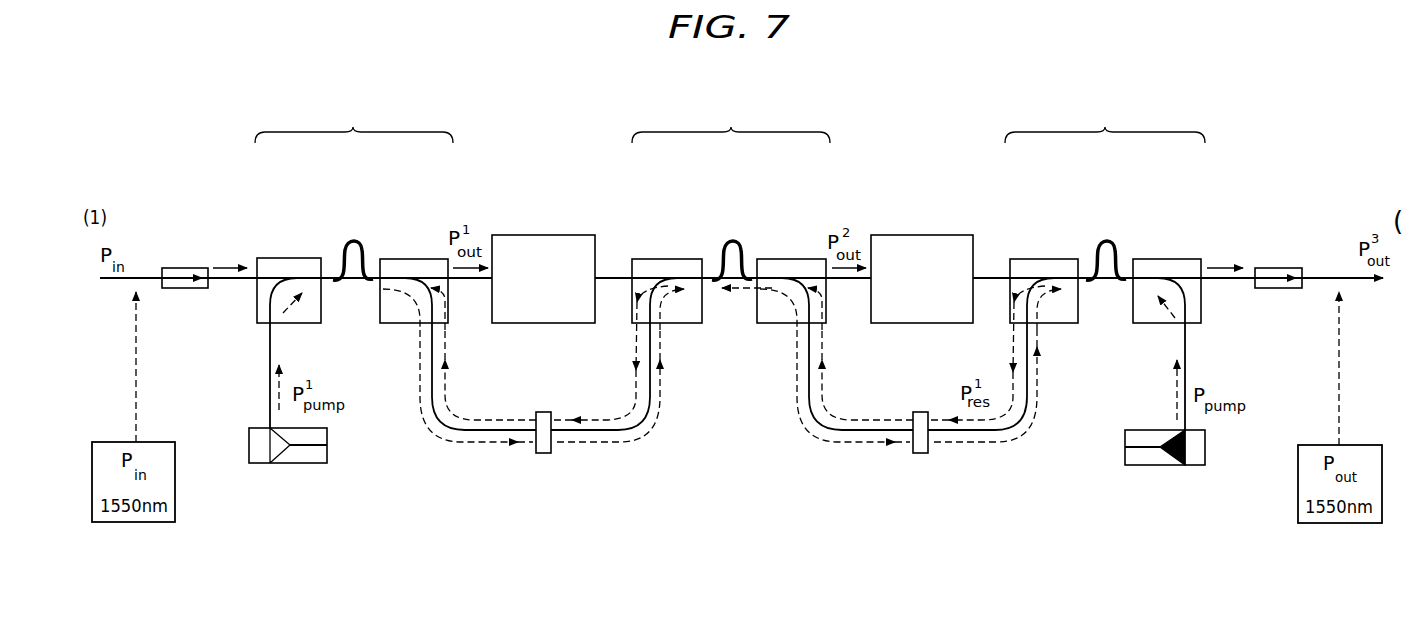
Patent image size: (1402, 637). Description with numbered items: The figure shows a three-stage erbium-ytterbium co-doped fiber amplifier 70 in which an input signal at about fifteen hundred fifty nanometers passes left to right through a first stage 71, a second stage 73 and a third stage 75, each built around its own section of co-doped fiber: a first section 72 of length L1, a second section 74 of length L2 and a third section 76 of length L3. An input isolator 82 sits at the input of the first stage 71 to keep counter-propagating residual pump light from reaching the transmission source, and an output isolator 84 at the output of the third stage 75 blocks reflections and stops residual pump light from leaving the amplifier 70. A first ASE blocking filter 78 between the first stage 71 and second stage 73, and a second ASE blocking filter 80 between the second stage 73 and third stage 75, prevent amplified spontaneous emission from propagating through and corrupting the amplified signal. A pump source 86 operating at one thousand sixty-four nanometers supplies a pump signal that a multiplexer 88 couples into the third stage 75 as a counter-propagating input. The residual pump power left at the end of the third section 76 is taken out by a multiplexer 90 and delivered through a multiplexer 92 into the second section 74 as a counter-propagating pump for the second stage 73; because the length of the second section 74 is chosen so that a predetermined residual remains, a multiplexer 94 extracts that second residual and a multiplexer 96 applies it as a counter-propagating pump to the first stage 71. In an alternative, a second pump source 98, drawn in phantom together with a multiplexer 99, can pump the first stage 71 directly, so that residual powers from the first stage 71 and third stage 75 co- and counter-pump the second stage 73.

The three-stage Er-Yb co-doped fiber amplifier 70 is at (739, 74).
The first stage 71 is at (354, 146).
The first section of co-doped fiber 72 is at (357, 233).
The second stage 73 is at (731, 146).
The second section of co-doped fiber 74 is at (737, 233).
The third stage 75 is at (1105, 146).
The third section of co-doped fiber 76 is at (1111, 233).
The first ASE blocking filter 78 is at (546, 235).
The second ASE blocking filter 80 is at (927, 235).
The input isolator 82 is at (188, 268).
The output isolator 84 is at (1280, 268).
The pump source 86 is at (1125, 440).
The multiplexer 88 is at (1167, 259).
The multiplexer 90 is at (1049, 259).
The multiplexer 92 is at (826, 312).
The multiplexer 94 is at (662, 259).
The multiplexer 96 is at (448, 312).
The second pump source 98 is at (249, 430).
The multiplexer 99 is at (272, 258).